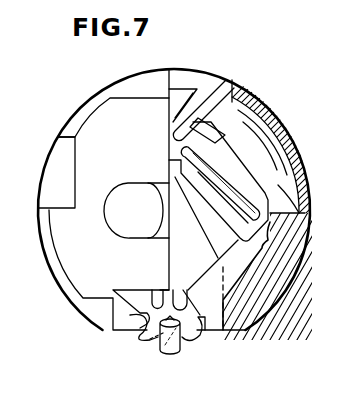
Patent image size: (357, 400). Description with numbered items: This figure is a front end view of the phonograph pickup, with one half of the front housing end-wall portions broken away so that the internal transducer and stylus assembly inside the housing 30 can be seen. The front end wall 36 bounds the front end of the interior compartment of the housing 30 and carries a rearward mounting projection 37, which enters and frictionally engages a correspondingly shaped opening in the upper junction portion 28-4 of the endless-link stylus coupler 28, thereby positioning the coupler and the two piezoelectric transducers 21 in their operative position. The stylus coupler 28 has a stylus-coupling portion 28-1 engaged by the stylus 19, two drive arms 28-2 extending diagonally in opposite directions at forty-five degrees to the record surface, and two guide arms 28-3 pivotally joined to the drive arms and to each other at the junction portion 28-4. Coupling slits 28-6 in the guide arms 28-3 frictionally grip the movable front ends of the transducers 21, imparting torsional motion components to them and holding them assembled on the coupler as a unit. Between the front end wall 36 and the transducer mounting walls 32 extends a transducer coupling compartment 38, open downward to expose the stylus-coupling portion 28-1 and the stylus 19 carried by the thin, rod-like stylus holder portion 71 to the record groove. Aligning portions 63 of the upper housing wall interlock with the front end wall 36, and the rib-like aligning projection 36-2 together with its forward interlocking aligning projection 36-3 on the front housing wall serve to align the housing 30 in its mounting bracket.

The housing 30 is at (284, 84).
The stylus coupler 28 is at (221, 130).
The stylus-coupling portion 28-1 is at (143, 331).
The drive arms 28-2 is at (240, 270).
The guide arms 28-3 is at (302, 183).
The junction portion 28-4 is at (212, 93).
The coupling slits 28-6 is at (236, 140).
The piezoelectric transducers 21 is at (226, 160).
The transducer mounting walls 32 is at (200, 227).
The front end wall 36 is at (100, 117).
The rib-like aligning projection 36-2 is at (115, 210).
The interlocking and aligning projection 36-3 is at (155, 221).
The mounting projection 37 is at (183, 93).
The transducer coupling compartment 38 is at (218, 318).
The aligning portions 63 is at (67, 177).
The stylus 19 is at (170, 352).
The stylus holder portion 71 is at (163, 341).